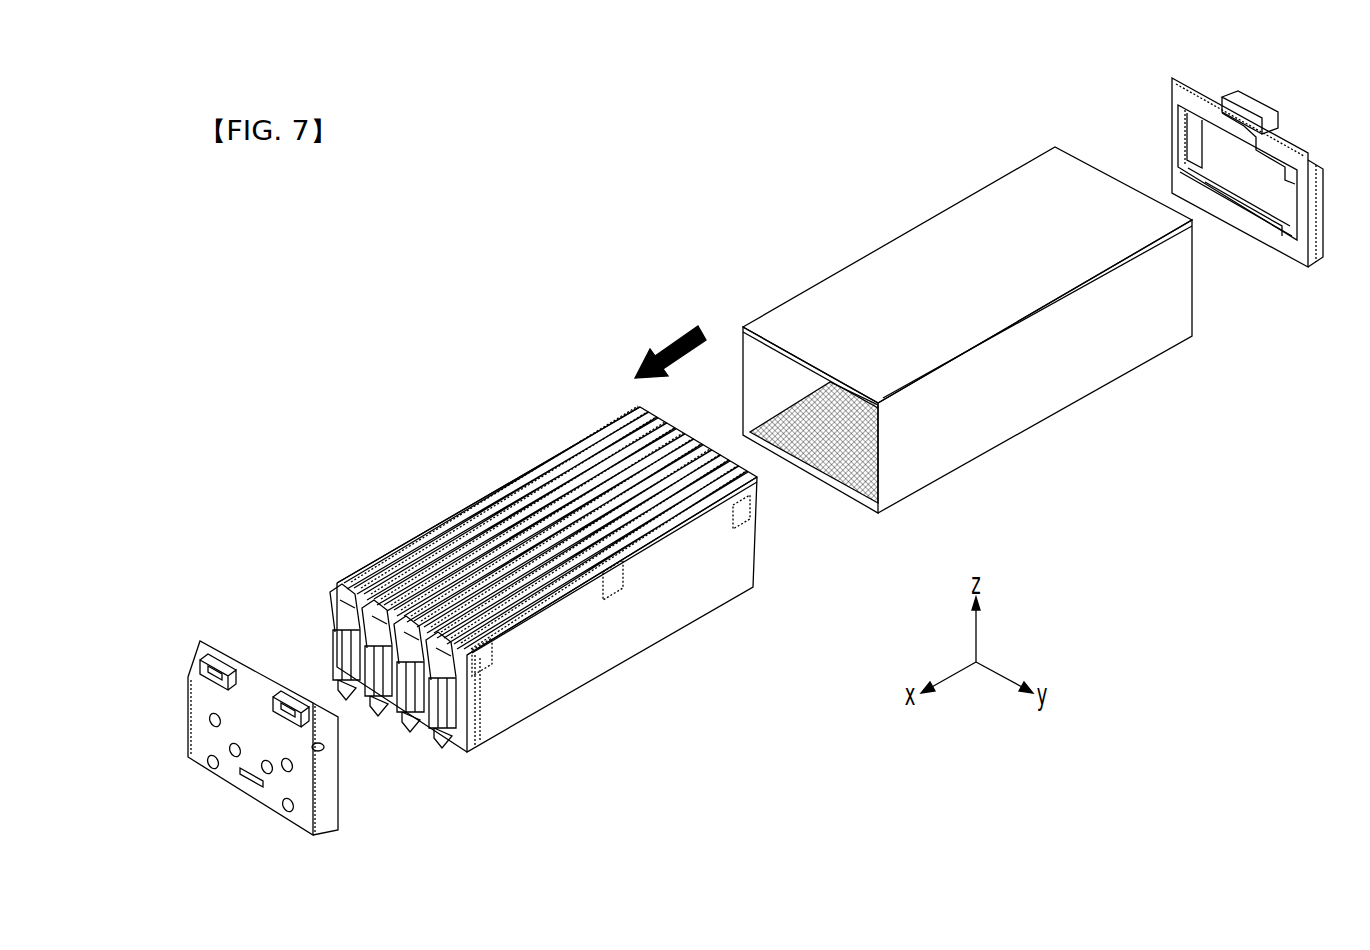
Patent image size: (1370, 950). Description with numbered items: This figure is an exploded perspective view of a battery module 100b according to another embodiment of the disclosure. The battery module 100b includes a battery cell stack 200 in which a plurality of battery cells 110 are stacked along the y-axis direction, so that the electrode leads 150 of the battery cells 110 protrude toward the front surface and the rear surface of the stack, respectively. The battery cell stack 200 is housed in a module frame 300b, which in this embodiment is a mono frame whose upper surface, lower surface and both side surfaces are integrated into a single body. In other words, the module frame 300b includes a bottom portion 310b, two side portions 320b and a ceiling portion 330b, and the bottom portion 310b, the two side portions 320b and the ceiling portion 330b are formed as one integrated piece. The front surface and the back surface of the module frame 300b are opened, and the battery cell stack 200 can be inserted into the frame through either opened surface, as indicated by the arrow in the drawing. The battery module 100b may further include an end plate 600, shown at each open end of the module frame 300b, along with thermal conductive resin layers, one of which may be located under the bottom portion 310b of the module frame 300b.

The battery module 100b is at (655, 131).
The battery cell 110 is at (618, 640).
The electrode lead 150 is at (432, 735).
The battery cell stack 200 is at (543, 612).
The module frame 300b is at (910, 364).
The bottom portion 310b is at (845, 466).
The side portion 320b is at (765, 367).
The ceiling portion 330b is at (880, 268).
The end plate 600 is at (205, 735).